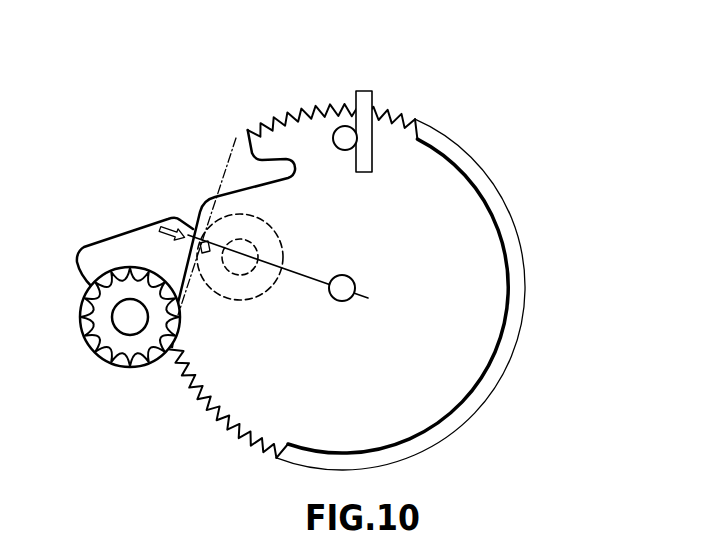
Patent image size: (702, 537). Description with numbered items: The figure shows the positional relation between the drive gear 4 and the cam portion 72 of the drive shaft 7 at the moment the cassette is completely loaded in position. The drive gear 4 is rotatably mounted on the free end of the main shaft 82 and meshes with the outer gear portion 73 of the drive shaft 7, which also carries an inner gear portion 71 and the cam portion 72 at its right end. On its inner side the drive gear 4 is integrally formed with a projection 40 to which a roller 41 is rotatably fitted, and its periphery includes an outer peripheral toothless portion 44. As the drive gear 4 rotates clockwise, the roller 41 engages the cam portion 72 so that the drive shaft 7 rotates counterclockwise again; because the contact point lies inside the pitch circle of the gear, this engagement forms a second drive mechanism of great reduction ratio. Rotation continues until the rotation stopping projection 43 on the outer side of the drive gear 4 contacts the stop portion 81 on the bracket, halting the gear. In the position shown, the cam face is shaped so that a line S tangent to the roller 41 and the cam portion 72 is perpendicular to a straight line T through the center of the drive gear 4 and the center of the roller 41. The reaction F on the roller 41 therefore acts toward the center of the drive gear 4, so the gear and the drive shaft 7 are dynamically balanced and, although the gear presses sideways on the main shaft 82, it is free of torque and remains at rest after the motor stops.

The drive gear 4 is at (443, 180).
The stop portion 81 is at (368, 88).
The rotation stopping projection 43 is at (338, 130).
The outer peripheral toothless portion 44 is at (198, 207).
The cam portion 72 is at (108, 248).
The reaction F is at (157, 238).
The inner gear portion 71 is at (90, 300).
The outer gear portion 73 is at (102, 345).
The drive shaft 7 is at (120, 318).
The roller 41 is at (285, 250).
The projection 40 is at (243, 278).
The line S is at (222, 172).
The straight line T is at (302, 273).
The main shaft 82 is at (345, 297).